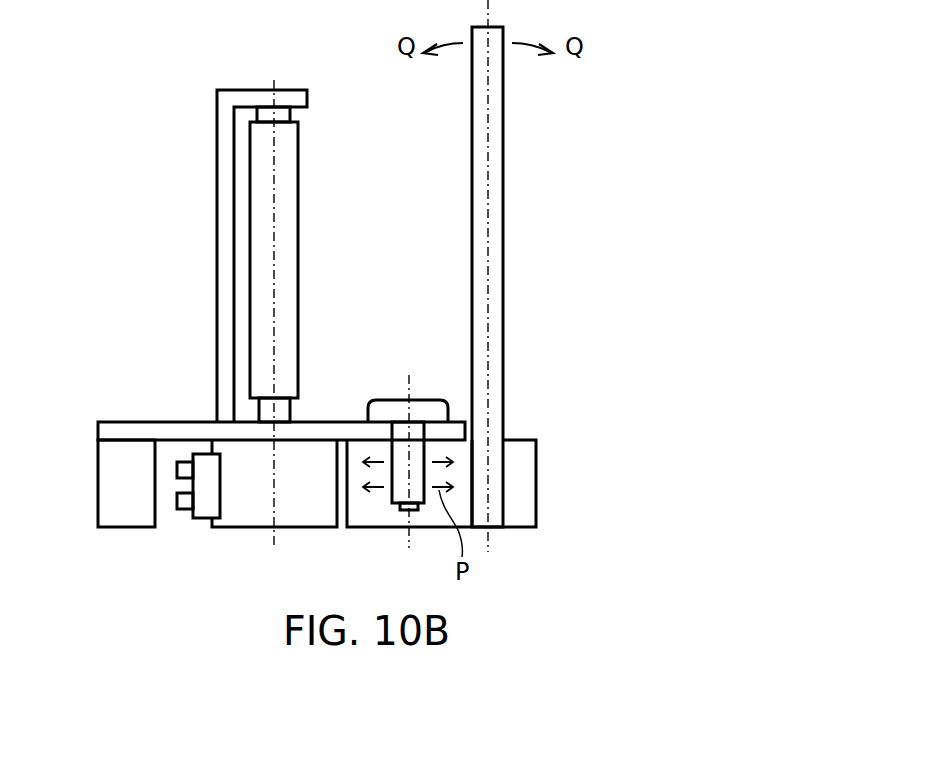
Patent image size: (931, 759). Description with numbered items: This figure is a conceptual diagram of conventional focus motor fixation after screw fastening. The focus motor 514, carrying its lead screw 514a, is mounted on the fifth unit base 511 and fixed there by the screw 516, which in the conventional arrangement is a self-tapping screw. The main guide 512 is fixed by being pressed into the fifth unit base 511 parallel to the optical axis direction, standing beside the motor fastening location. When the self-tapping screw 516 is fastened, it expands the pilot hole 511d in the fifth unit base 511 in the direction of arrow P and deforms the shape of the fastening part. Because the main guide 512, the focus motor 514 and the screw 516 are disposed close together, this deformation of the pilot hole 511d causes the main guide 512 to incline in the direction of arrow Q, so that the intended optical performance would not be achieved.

The fifth unit base 511 is at (514, 470).
The pilot hole 511d is at (401, 510).
The main guide 512 is at (497, 284).
The focus motor 514 is at (257, 487).
The lead screw 514a is at (262, 253).
The screw 516 is at (393, 406).